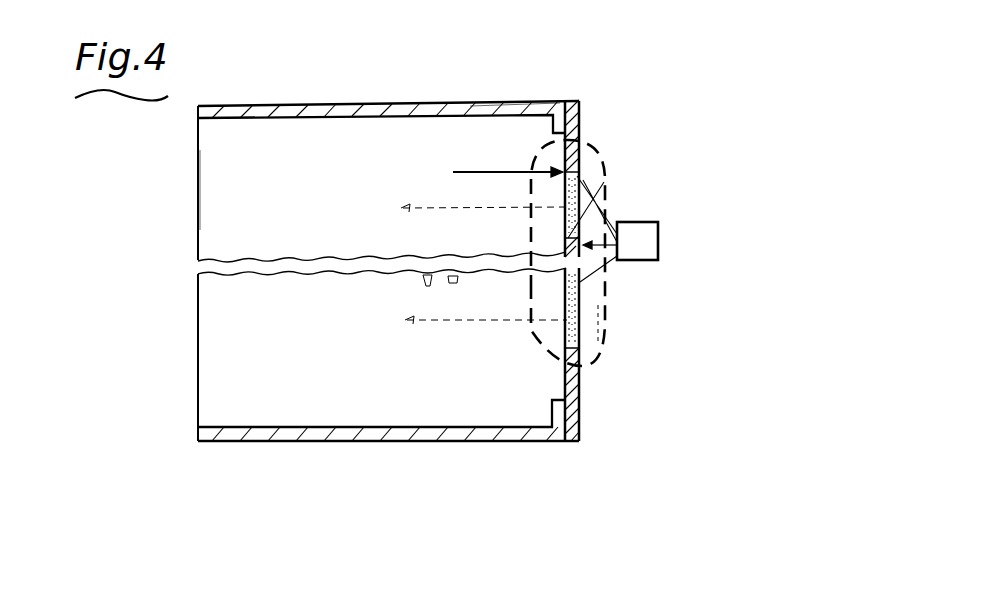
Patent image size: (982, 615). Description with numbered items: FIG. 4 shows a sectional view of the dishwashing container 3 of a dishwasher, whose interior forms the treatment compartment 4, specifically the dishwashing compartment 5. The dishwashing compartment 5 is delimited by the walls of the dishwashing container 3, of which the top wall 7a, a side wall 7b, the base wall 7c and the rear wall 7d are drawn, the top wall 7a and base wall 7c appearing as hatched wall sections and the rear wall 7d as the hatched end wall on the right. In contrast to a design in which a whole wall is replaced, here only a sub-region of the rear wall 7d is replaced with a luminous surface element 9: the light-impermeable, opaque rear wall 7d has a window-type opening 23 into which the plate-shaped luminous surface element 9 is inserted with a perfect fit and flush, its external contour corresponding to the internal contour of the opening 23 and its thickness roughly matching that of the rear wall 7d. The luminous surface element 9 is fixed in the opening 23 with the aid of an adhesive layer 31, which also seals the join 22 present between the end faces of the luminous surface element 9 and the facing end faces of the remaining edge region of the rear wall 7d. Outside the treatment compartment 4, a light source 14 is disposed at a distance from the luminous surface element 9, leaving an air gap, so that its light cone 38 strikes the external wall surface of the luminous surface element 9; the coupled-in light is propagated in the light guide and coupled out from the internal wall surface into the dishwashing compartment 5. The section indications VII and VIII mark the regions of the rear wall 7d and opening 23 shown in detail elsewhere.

The dishwashing container 3 is at (343, 443).
The treatment compartment 4 is at (388, 311).
The dishwashing compartment 5 is at (328, 134).
The top wall 7a is at (492, 104).
The side wall 7b is at (237, 212).
The base wall 7c is at (437, 440).
The rear wall 7d is at (578, 390).
The luminous surface element 9 is at (563, 292).
The light source 14 is at (658, 233).
The join 22 is at (459, 179).
The window-type opening 23 is at (561, 136).
The adhesive layer 31 is at (459, 179).
The light cone 38 is at (606, 178).
The section view VII is at (603, 160).
The section view VIII is at (598, 332).